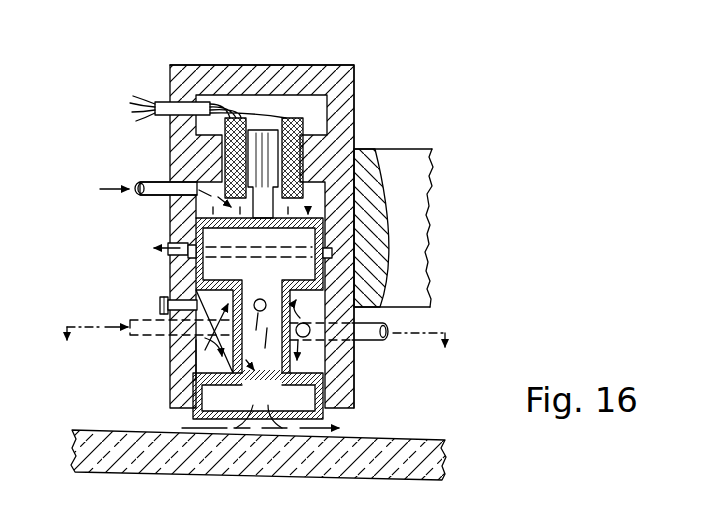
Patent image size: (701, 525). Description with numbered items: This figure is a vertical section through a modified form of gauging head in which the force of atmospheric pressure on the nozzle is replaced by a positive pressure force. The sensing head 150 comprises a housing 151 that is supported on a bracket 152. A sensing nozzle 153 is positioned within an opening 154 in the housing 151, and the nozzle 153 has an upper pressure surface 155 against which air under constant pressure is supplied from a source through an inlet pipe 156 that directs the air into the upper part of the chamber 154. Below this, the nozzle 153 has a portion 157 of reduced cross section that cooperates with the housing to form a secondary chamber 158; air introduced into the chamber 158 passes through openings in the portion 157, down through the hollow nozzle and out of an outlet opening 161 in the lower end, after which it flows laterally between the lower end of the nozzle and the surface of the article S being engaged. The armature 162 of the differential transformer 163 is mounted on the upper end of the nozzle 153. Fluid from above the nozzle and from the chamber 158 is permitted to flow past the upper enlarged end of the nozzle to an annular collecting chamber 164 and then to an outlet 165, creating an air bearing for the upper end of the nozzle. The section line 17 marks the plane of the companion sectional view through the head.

The sensing head 150 is at (359, 112).
The housing 151 is at (325, 72).
The bracket 152 is at (397, 149).
The sensing nozzle 153 is at (297, 398).
The opening 154 is at (320, 357).
The upper pressure surface 155 is at (200, 211).
The inlet pipe 156 is at (156, 183).
The portion of reduced cross section 157 is at (232, 346).
The secondary chamber 158 is at (200, 362).
The outlet opening 161 is at (266, 408).
The armature 162 is at (262, 130).
The differential transformer 163 is at (287, 125).
The annular collecting chamber 164 is at (178, 252).
The outlet 165 is at (176, 246).
The article S is at (416, 440).
The section line 17— 17 is at (253, 351).